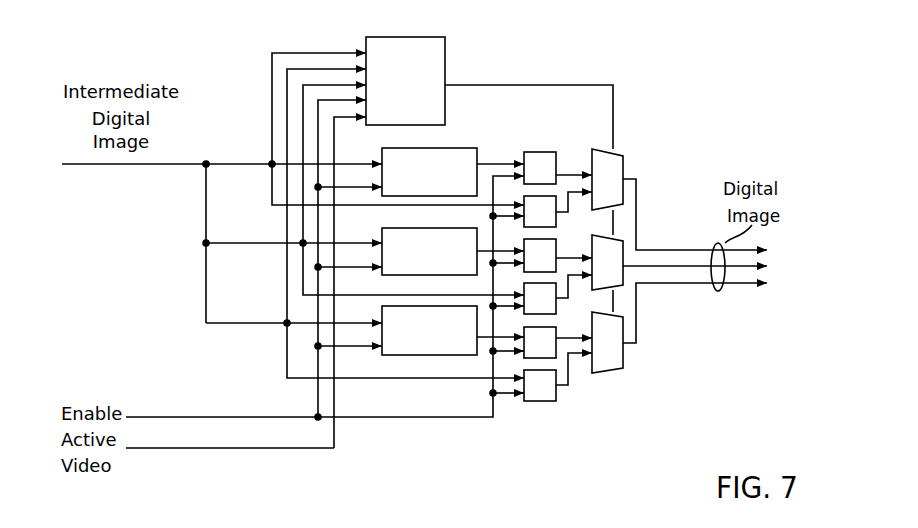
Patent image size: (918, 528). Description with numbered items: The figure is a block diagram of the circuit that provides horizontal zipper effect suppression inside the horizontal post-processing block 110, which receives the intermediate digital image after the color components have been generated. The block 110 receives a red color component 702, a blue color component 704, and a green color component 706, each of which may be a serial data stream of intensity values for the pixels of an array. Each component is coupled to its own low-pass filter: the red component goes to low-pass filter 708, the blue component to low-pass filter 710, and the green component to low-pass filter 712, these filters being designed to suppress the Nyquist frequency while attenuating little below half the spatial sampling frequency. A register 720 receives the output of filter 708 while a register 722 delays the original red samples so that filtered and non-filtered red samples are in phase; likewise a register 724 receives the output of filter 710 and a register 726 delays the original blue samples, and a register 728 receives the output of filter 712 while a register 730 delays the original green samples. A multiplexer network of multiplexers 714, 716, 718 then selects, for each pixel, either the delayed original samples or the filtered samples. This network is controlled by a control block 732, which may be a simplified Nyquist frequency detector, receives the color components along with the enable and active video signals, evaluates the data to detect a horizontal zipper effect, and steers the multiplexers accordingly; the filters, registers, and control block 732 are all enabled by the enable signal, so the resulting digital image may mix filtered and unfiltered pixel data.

The horizontal post-processing block 110 is at (686, 80).
The red color component 702 is at (225, 163).
The blue color component 704 is at (220, 243).
The green color component 706 is at (220, 323).
The low-pass filter 708 is at (447, 148).
The low-pass filter 710 is at (381, 230).
The low-pass filter 712 is at (407, 358).
The multiplexer 714 is at (623, 158).
The multiplexer 716 is at (618, 240).
The multiplexer 718 is at (623, 350).
The register 720 is at (545, 152).
The register 722 is at (548, 212).
The register 724 is at (548, 240).
The register 726 is at (548, 290).
The register 728 is at (550, 327).
The register 730 is at (557, 402).
The control block 732 is at (448, 56).